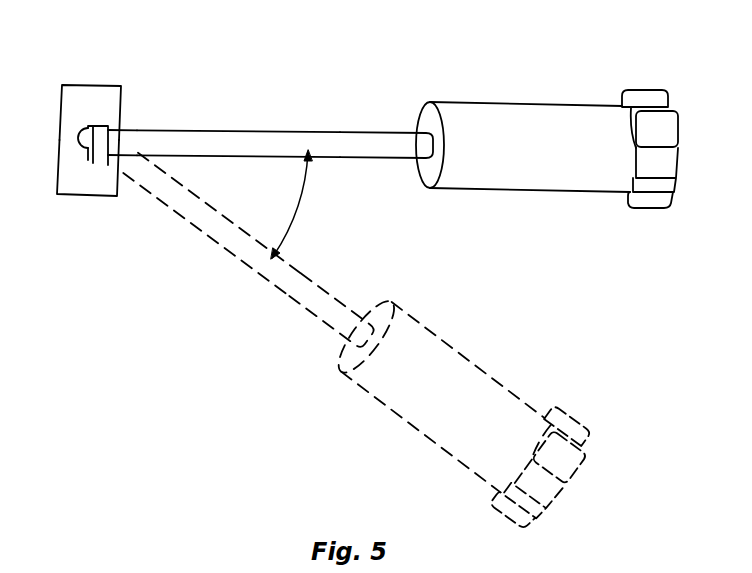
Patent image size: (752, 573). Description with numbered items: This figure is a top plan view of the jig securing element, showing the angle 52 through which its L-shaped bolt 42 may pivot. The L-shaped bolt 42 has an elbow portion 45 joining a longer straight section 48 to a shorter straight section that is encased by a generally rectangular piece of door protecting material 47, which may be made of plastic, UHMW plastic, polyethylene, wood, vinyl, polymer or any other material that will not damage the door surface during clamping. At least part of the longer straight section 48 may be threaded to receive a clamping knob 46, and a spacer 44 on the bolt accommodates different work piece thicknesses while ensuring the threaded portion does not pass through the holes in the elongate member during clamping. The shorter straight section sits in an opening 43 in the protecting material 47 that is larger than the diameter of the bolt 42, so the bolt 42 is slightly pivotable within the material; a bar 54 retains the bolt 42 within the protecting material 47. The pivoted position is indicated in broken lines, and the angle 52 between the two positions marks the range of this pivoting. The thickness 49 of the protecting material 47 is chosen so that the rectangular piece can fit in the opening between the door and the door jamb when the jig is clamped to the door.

The L-shaped bolt 42 is at (265, 143).
The opening 43 is at (124, 177).
The spacer 44 is at (549, 120).
The elbow portion 45 is at (112, 145).
The clamping knob 46 is at (645, 110).
The door protecting material 47 is at (79, 98).
The longer straight section 48 is at (370, 147).
The thickness 49 is at (87, 175).
The angle 52 is at (298, 202).
The bar 54 is at (103, 133).